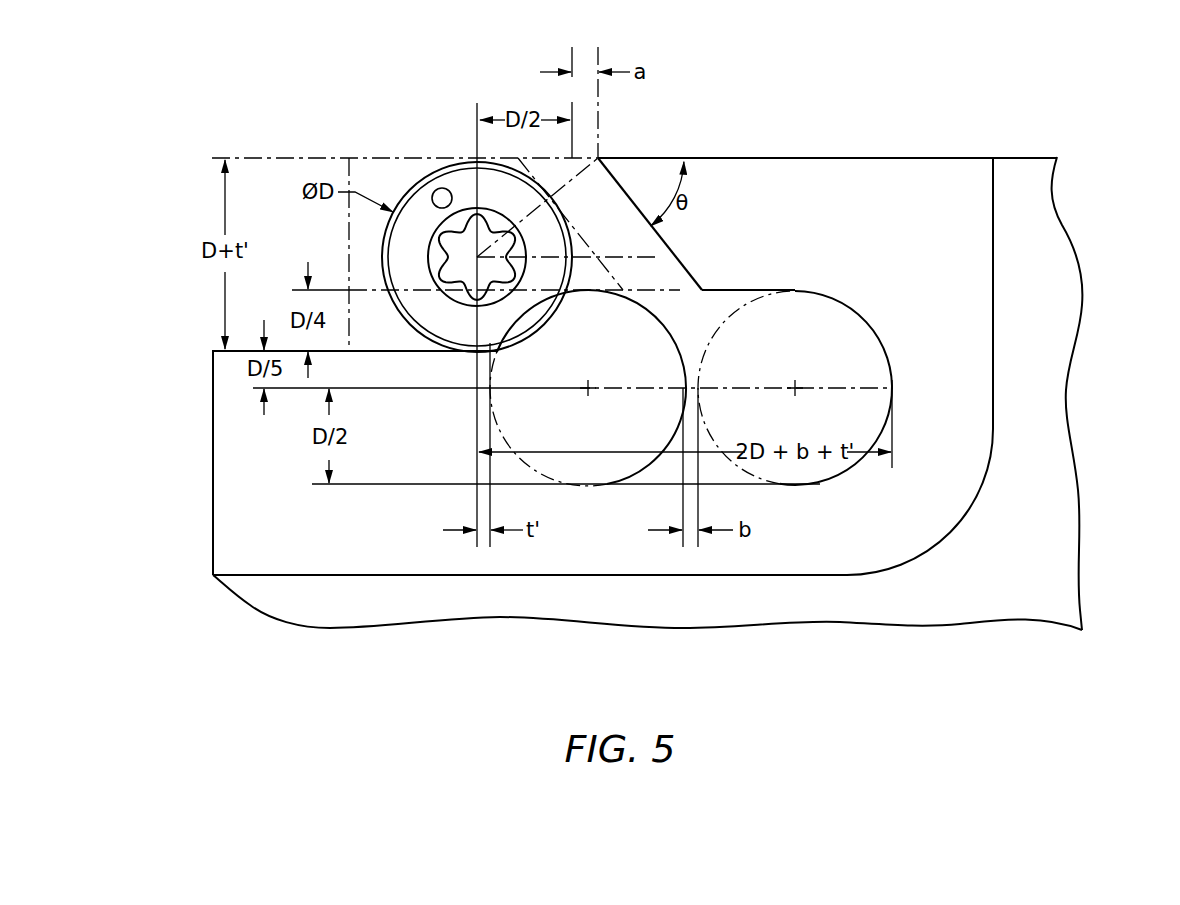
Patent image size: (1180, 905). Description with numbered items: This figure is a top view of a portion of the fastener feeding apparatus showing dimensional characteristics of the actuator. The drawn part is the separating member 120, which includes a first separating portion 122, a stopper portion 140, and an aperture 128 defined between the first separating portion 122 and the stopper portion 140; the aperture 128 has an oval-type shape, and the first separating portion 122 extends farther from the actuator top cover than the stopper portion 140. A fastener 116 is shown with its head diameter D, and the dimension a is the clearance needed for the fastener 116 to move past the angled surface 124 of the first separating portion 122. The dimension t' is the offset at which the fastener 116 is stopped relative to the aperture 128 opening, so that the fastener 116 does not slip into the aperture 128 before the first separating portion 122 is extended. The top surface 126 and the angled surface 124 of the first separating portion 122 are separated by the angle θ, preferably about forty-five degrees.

The fastener 116 is at (440, 170).
The separating member 120 is at (277, 143).
The first separating portion 122 is at (701, 150).
The angled surface 124 is at (687, 266).
The top surface 126 is at (655, 157).
The aperture 128 is at (828, 336).
The stopper portion 140 is at (393, 351).